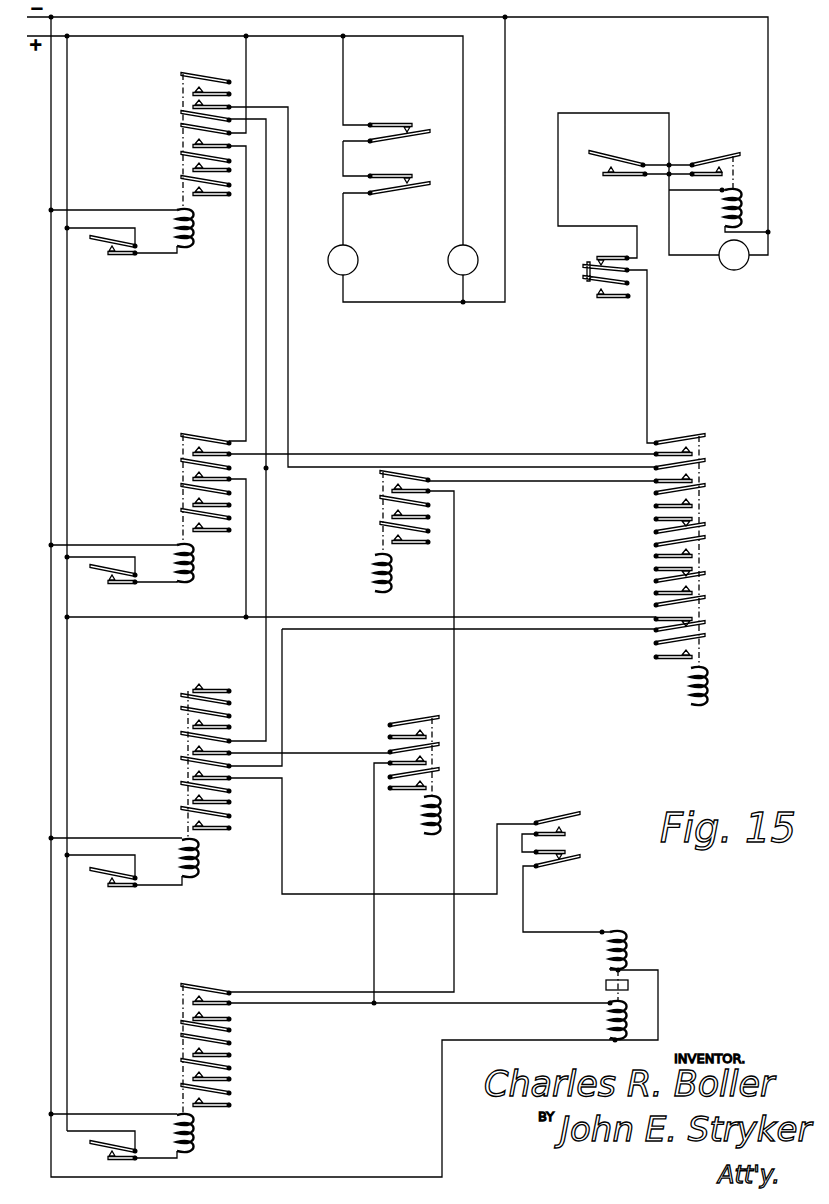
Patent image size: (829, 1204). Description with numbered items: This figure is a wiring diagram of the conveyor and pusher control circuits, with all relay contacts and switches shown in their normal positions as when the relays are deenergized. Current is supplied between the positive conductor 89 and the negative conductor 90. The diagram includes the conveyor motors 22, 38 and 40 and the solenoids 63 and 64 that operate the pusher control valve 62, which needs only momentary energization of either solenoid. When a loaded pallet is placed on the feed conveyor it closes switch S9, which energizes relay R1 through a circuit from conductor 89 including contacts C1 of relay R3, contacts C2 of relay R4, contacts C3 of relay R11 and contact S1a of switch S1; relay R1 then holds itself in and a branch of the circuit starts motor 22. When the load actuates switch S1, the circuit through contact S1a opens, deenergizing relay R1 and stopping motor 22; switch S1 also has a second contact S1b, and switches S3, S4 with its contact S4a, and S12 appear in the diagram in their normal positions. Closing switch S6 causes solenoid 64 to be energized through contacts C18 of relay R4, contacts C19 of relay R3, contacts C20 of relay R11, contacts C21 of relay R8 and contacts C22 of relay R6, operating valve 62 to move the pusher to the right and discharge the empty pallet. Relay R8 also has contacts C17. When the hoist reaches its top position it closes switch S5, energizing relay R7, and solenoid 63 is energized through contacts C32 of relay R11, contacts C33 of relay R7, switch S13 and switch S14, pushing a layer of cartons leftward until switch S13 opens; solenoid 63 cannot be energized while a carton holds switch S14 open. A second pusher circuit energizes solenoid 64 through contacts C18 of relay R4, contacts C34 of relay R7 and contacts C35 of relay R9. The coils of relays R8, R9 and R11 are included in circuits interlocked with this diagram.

The current supply conductor 89 is at (150, 42).
The current supply conductor 90 is at (596, 20).
The contacts of relay R3 C19 is at (193, 108).
The contacts of relay R3 C1 is at (200, 140).
The relay R3 is at (194, 231).
The switch S3 is at (110, 250).
The switch S4 is at (396, 129).
The contact of switch S4 S4a is at (394, 180).
The conveyor motor 38 is at (358, 257).
The conveyor motor 40 is at (450, 265).
The switch S9 is at (634, 147).
The relay R1 is at (722, 218).
The conveyor motor 22 is at (733, 270).
The contact of switch S1 S1a is at (608, 256).
The switch S1 is at (582, 270).
The contact of switch S1 S1b is at (596, 288).
The contacts of relay R4 C2 is at (193, 443).
The contacts of relay R4 C18 is at (190, 468).
The relay R4 is at (194, 568).
The switch S12 is at (110, 580).
The contacts of relay R8 C21 is at (388, 480).
The contacts of relay R8 C17 is at (389, 531).
The relay R8 is at (394, 572).
The contacts of relay R11 C3 is at (707, 446).
The contacts of relay R11 C20 is at (692, 473).
The contacts of relay R11 C32 is at (706, 619).
The relay R11 is at (712, 689).
The contacts of relay R7 C34 is at (200, 747).
The contacts of relay R7 C33 is at (200, 774).
The relay R7 is at (203, 866).
The switch S5 is at (108, 878).
The contacts of relay R9 C35 is at (425, 757).
The relay R9 is at (418, 830).
The switch S13 is at (581, 824).
The switch S14 is at (581, 866).
The solenoid 63 is at (630, 945).
The pusher control valve 62 is at (604, 982).
The solenoid 64 is at (608, 1021).
The contacts of relay R6 C22 is at (193, 994).
The relay R6 is at (196, 1139).
The switch S6 is at (108, 1150).